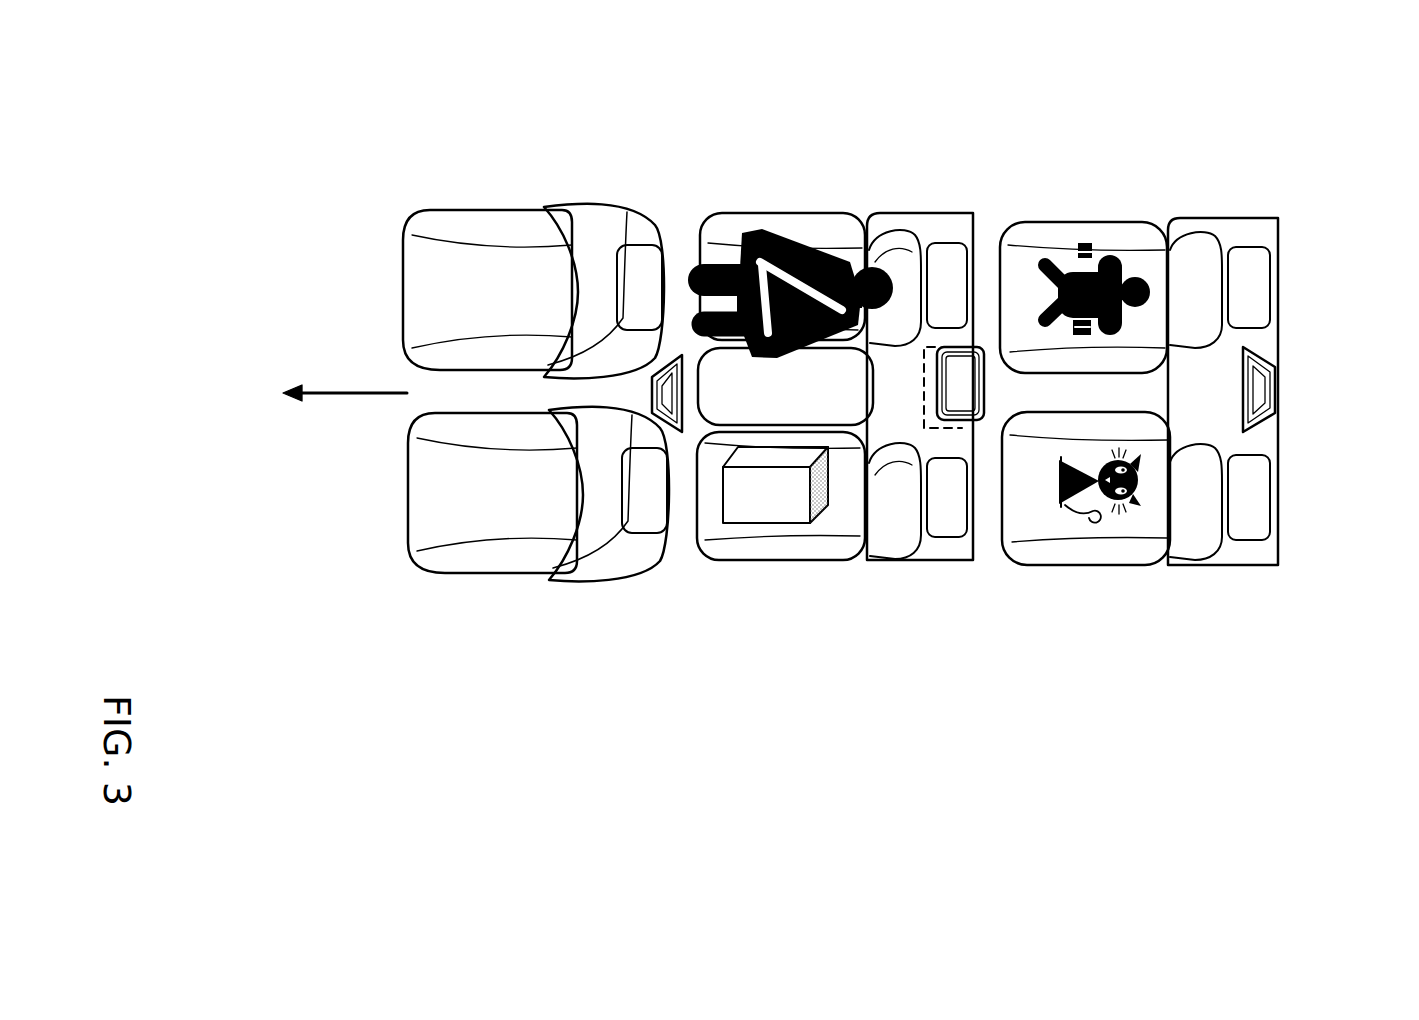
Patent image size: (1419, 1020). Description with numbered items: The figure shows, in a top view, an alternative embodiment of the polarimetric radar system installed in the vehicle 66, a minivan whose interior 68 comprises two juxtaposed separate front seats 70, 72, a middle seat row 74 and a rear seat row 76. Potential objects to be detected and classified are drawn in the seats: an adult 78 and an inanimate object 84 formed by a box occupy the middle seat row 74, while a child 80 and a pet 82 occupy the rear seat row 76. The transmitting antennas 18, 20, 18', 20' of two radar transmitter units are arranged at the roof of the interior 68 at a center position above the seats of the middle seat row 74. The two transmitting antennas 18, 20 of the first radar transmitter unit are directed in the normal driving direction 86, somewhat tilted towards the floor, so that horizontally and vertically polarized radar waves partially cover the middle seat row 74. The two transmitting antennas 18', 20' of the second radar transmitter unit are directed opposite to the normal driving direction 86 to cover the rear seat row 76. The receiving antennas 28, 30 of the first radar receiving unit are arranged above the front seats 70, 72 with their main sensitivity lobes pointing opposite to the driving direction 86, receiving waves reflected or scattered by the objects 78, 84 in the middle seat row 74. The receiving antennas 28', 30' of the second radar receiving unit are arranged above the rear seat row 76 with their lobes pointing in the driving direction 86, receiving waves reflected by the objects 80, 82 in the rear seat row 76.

The first transmitting antenna 18 is at (1036, 242).
The second transmitting antenna 20 is at (1036, 242).
The first transmitting antenna of second radar transmitter unit 18' is at (989, 521).
The second transmitting antenna of second radar transmitter unit 20' is at (989, 521).
The receiving antenna 28 is at (704, 246).
The receiving antenna 30 is at (704, 246).
The receiving antenna of second radar receiving unit 28' is at (1321, 249).
The receiving antenna of second radar receiving unit 30' is at (1321, 249).
The vehicle 66 is at (1318, 647).
The interior 68 is at (1031, 183).
The front seat 70 is at (435, 212).
The front seat 72 is at (437, 567).
The middle seat row 74 is at (792, 625).
The rear seat row 76 is at (1128, 625).
The adult 78 is at (793, 268).
The child 80 is at (1113, 272).
The pet 82 is at (1130, 462).
The inanimate object 84 is at (828, 452).
The normal driving direction 86 is at (352, 391).